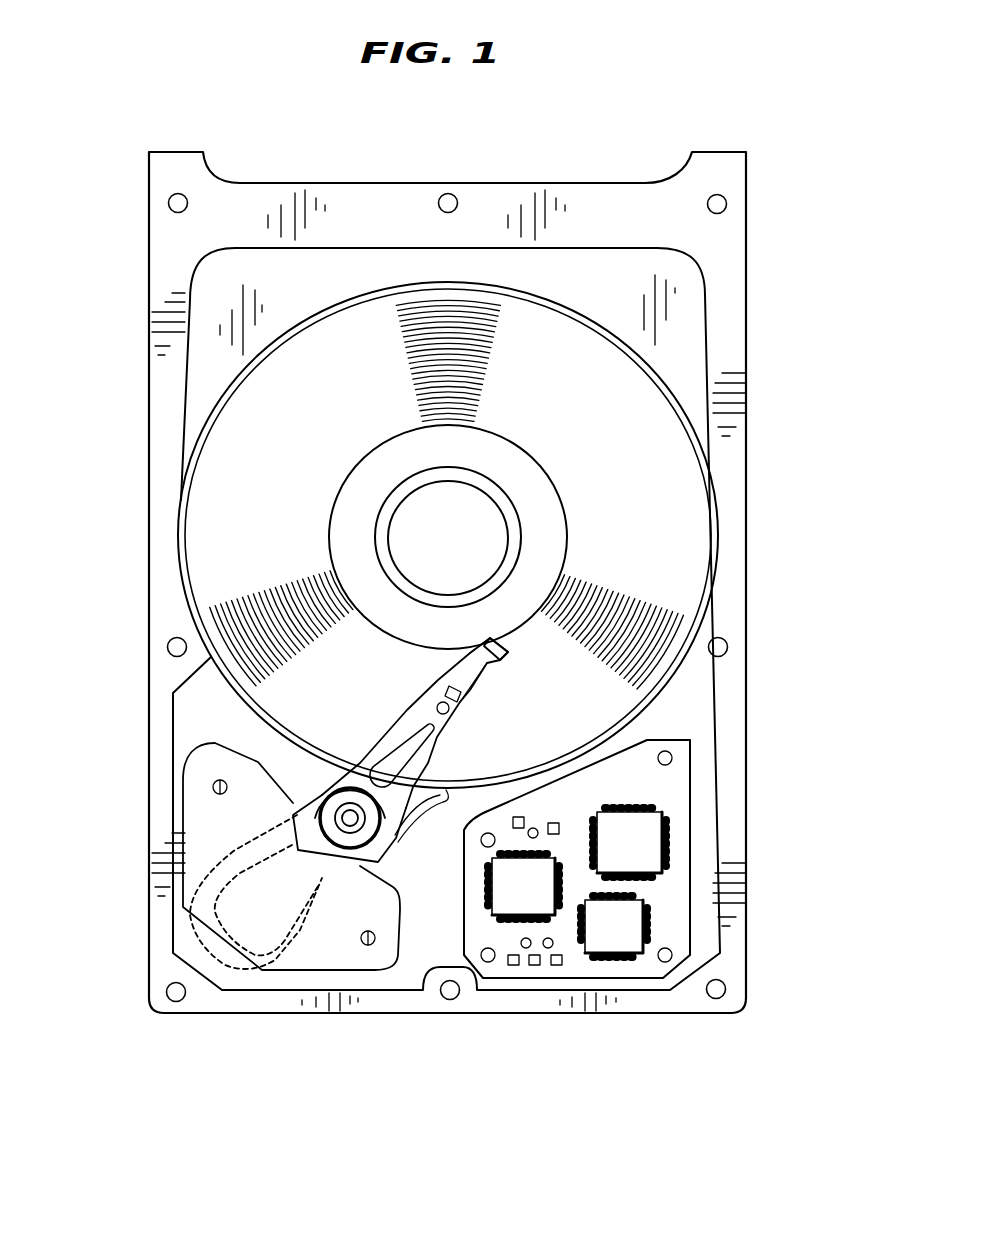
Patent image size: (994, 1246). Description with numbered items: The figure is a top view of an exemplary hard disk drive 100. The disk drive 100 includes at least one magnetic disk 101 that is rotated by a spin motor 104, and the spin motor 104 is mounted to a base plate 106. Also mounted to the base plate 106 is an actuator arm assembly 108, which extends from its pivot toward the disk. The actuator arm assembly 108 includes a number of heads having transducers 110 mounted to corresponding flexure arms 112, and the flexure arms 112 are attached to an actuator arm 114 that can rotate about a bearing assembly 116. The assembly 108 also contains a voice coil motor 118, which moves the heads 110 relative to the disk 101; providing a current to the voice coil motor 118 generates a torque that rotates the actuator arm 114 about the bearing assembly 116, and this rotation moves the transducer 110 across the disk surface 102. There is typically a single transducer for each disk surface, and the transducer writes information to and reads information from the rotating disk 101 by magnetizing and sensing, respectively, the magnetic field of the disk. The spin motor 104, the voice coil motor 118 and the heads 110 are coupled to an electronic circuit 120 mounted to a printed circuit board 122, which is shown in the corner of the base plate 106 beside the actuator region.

The hard disk drive 100 is at (730, 107).
The magnetic disk 101 is at (670, 541).
The disk surface 102 is at (617, 423).
The spin motor 104 is at (541, 497).
The base plate 106 is at (218, 290).
The actuator arm assembly 108 is at (447, 723).
The transducer 110 is at (503, 645).
The flexure arm 112 is at (463, 672).
The actuator arm 114 is at (400, 730).
The bearing assembly 116 is at (378, 828).
The voice coil motor 118 is at (302, 920).
The electronic circuit 120 is at (650, 842).
The printed circuit board 122 is at (673, 780).